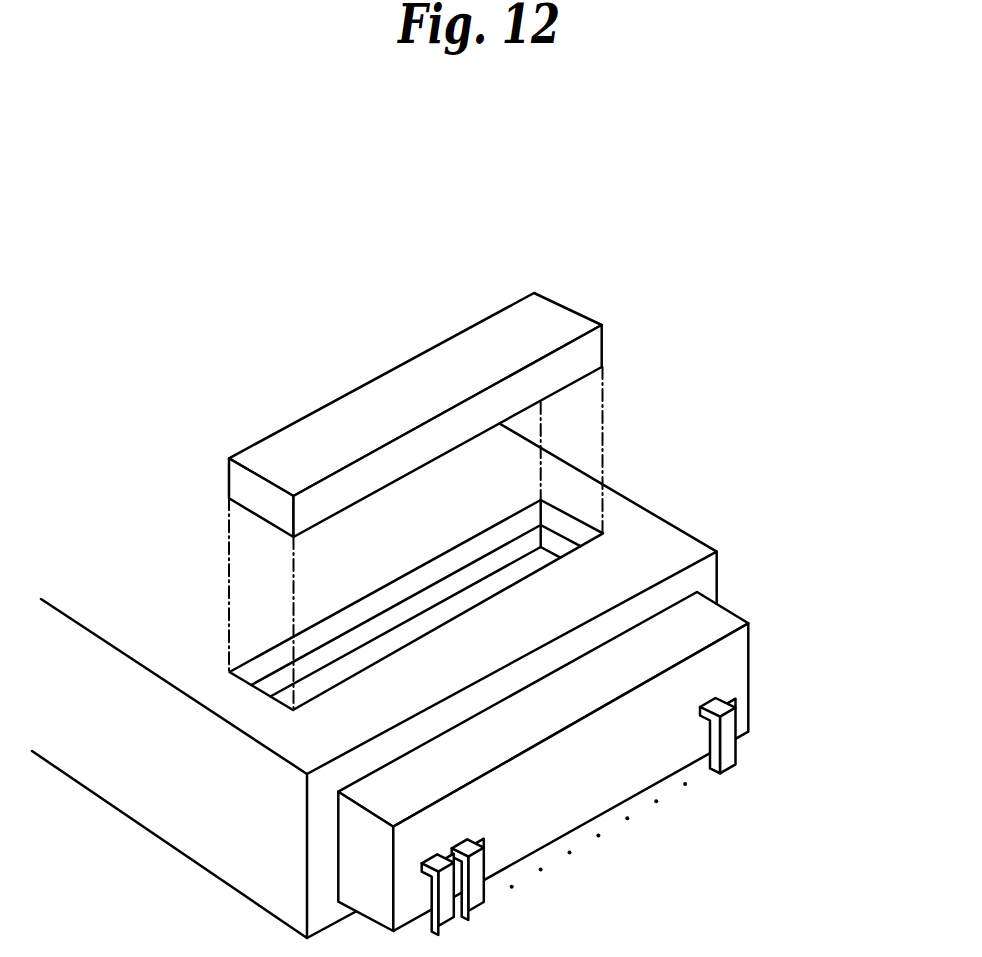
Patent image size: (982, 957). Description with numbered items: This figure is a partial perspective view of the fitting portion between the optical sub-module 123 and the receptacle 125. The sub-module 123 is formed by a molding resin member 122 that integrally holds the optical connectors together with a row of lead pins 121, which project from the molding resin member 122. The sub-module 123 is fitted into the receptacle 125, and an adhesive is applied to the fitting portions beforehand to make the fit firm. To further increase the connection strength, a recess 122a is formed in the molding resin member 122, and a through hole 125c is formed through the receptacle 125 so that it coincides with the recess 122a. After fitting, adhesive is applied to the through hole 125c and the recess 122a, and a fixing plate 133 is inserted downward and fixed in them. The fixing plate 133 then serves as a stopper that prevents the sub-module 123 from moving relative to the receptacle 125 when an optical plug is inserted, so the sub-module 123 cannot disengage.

The lead pins 121 is at (730, 757).
The molding resin member 122 is at (726, 622).
The recess 122a is at (523, 570).
The optical sub-module 123 is at (613, 763).
The receptacle 125 is at (416, 678).
The through hole 125c is at (570, 525).
The fixing plate 133 is at (378, 387).